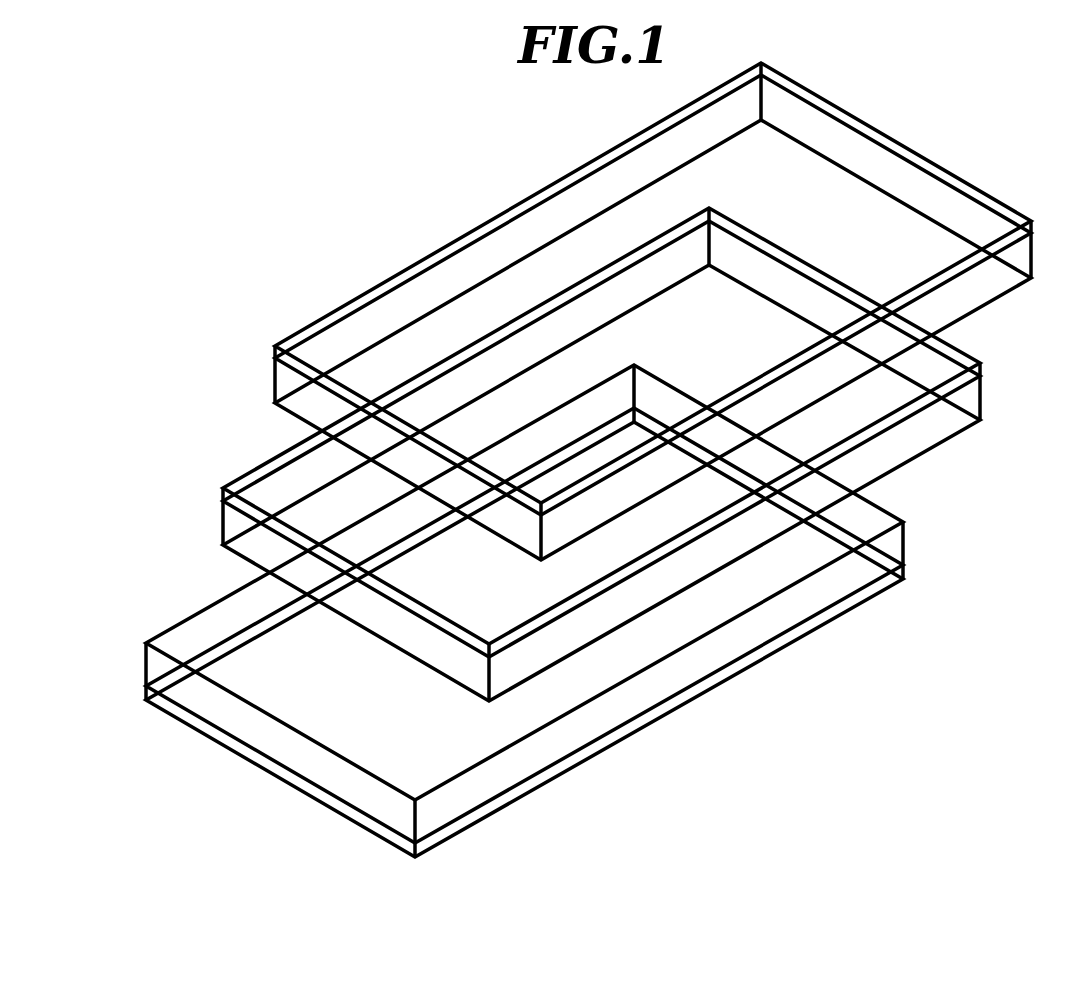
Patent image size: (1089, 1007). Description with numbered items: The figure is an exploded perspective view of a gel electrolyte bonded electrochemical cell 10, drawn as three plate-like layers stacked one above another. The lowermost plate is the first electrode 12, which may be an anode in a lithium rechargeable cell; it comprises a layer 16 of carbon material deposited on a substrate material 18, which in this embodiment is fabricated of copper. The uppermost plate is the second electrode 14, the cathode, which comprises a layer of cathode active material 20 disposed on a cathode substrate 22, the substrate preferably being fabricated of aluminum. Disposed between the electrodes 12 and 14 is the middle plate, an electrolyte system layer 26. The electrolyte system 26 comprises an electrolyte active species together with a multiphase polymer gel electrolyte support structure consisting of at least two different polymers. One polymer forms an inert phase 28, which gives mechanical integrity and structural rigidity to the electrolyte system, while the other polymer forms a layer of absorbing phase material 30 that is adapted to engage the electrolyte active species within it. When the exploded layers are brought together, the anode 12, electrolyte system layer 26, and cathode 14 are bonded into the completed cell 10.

The cell 10 is at (878, 809).
The first electrode 12 is at (647, 738).
The second electrode 14 is at (493, 213).
The layer of carbon material 16 is at (278, 748).
The substrate material 18 is at (440, 838).
The cathode active material 20 is at (270, 372).
The cathode substrate 22 is at (275, 350).
The electrolyte system layer 26 is at (285, 548).
The inert phase 28 is at (222, 545).
The layer of absorbing phase material 30 is at (223, 492).